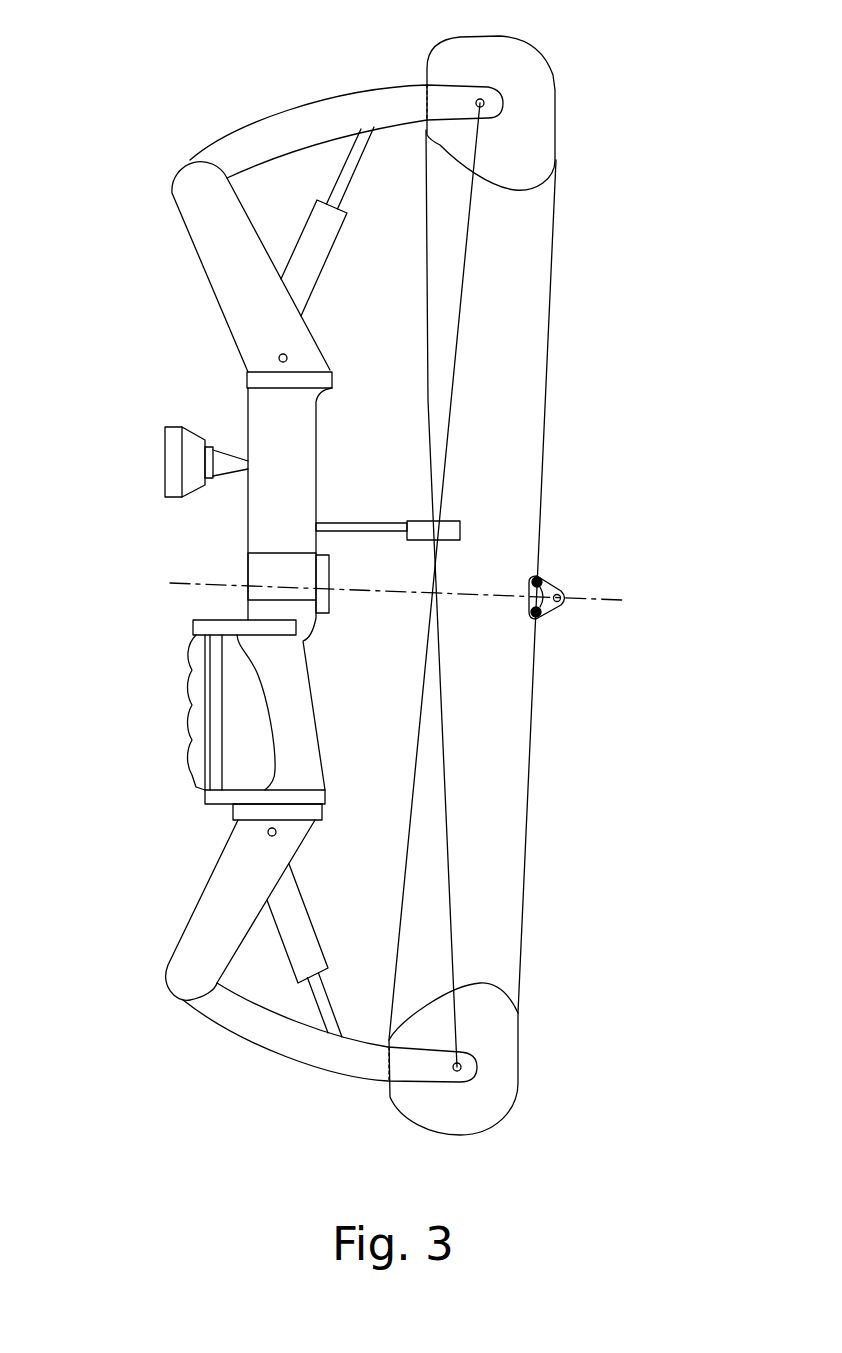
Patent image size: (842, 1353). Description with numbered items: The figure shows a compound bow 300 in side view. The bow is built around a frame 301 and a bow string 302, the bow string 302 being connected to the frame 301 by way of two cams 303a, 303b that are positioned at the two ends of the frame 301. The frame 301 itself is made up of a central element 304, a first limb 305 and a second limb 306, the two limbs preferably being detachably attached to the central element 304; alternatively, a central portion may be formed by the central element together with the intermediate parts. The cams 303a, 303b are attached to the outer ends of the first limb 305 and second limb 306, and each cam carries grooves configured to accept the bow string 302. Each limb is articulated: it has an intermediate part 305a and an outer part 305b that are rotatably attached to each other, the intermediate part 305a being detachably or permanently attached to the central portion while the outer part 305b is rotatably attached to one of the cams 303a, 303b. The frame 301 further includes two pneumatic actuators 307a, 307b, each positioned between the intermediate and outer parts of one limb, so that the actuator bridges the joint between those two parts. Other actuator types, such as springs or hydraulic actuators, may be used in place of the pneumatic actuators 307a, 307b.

The compound bow 300 is at (296, 81).
The frame 301 is at (243, 405).
The bow string 302 is at (545, 377).
The cam 303a is at (543, 112).
The cam 303b is at (502, 1084).
The central element 304 is at (272, 600).
The first limb 305 is at (188, 162).
The intermediate part 305a is at (228, 264).
The outer part 305b is at (257, 137).
The second limb 306 is at (203, 923).
The pneumatic actuator 307a is at (318, 238).
The pneumatic actuator 307b is at (297, 923).